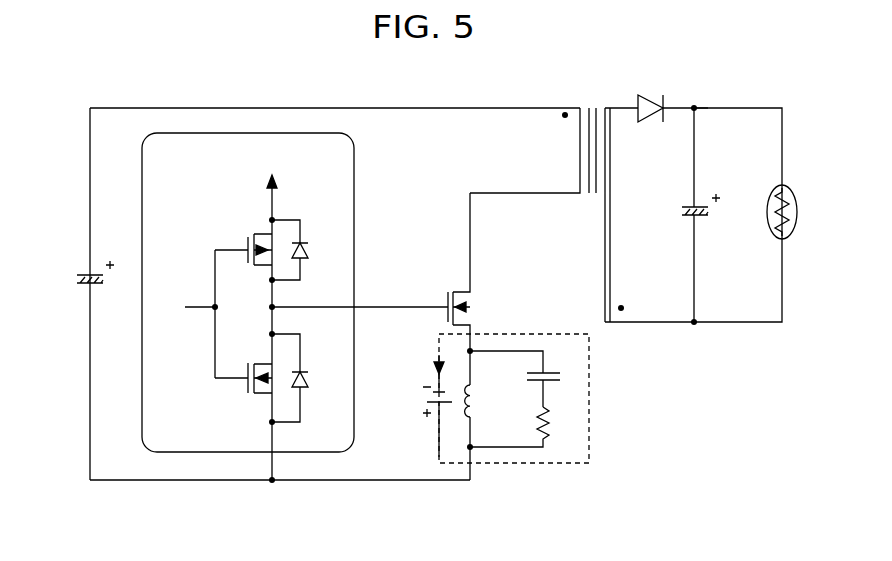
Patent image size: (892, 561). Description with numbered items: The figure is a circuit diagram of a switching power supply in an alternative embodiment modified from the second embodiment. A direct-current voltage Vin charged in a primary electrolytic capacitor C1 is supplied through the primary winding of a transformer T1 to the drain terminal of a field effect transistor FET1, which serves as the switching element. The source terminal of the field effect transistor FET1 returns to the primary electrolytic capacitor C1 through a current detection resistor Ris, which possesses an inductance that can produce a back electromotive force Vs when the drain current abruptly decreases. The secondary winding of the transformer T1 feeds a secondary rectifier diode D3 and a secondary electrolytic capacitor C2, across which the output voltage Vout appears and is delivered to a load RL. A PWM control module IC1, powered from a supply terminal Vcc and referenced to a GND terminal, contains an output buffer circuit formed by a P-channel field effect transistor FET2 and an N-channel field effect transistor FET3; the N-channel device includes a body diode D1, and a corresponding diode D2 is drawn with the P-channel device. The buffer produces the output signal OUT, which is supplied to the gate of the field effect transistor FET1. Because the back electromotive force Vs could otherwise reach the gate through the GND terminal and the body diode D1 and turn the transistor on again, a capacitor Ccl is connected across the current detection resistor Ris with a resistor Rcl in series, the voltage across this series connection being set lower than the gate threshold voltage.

The direct-current voltage Vin is at (335, 281).
The GND terminal GND is at (280, 467).
The primary electrolytic capacitor C1 is at (79, 275).
The PWM control module IC1 is at (225, 292).
The supply voltage terminal Vcc is at (273, 185).
The field effect transistor FET2 is at (231, 245).
The body diode of FET2 D2 is at (308, 250).
The field effect transistor FET3 is at (231, 386).
The body diode D1 is at (308, 378).
The output signal OUT is at (360, 294).
The field effect transistor FET1 is at (488, 272).
The transformer T1 is at (547, 202).
The secondary rectifier diode D3 is at (654, 122).
The direct-current voltage Vout is at (723, 95).
The secondary electrolytic capacitor C2 is at (685, 215).
The load resistor RL is at (766, 212).
The current detection resistor Ris is at (496, 414).
The back electromotive force Vs is at (424, 406).
The capacitor Ccl is at (524, 379).
The resistor Rcl is at (524, 416).